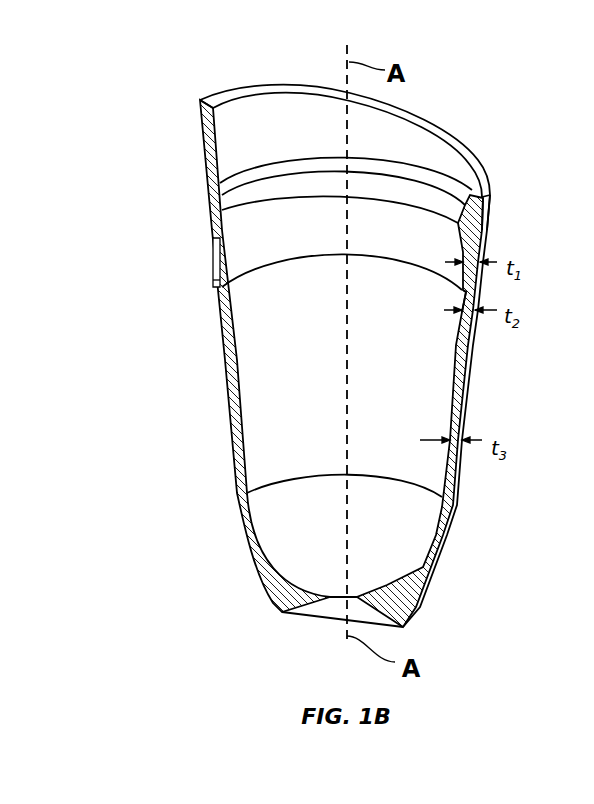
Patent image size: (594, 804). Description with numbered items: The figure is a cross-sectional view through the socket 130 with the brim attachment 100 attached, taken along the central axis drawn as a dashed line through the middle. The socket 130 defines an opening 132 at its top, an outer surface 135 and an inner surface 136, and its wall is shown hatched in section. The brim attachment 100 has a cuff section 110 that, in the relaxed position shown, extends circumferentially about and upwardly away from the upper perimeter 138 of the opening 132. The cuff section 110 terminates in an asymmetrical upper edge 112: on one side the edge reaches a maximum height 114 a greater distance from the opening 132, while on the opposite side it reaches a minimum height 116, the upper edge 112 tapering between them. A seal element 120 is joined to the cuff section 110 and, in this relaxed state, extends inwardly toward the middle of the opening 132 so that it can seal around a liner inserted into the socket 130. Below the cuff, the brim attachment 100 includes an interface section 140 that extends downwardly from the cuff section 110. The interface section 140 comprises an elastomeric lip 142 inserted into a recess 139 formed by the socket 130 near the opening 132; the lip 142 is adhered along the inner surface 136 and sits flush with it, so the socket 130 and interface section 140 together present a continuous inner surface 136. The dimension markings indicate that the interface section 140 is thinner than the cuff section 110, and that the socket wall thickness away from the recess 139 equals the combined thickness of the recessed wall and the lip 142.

The brim attachment 100 is at (158, 147).
The cuff section 110 is at (405, 145).
The upper edge 112 is at (305, 84).
The maximum height 114 is at (222, 96).
The minimum height 116 is at (488, 201).
The seal element 120 is at (450, 205).
The socket 130 is at (455, 405).
The opening 132 is at (318, 244).
The outer surface 135 is at (457, 510).
The inner surface 136 is at (255, 402).
The upper perimeter 138 is at (213, 240).
The recess 139 is at (465, 297).
The interface section 140 is at (250, 245).
The elastomeric lip 142 is at (220, 283).